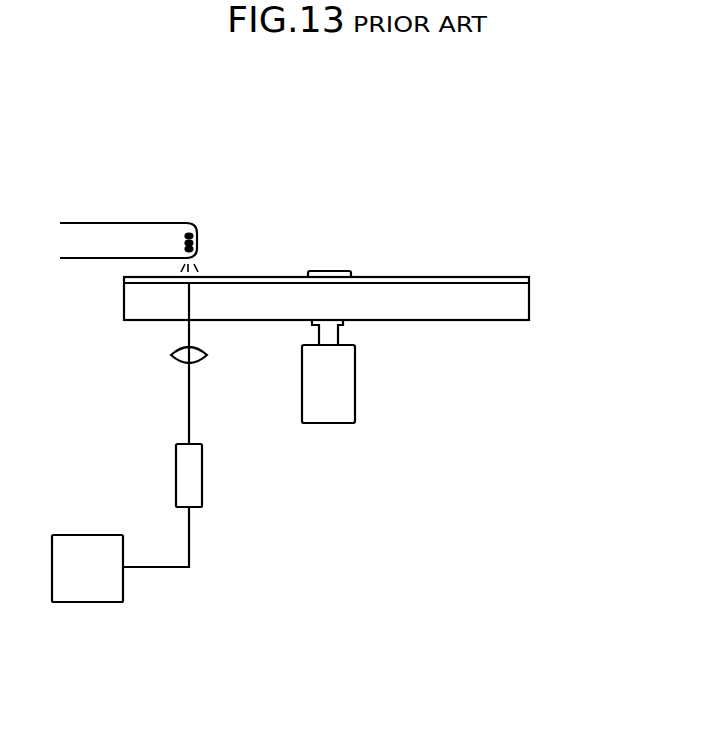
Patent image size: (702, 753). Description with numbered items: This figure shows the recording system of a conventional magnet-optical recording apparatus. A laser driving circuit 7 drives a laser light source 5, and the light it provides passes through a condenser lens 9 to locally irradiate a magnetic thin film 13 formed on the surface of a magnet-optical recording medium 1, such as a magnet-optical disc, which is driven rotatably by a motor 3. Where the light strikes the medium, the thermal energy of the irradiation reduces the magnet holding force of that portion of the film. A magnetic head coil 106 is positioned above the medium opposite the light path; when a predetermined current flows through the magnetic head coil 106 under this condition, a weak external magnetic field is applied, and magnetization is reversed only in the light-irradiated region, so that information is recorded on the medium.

The magnetic head coil 106 is at (193, 218).
The magnet-optical recording medium 1 is at (529, 295).
The magnetic thin film 13 is at (423, 277).
The motor 3 is at (350, 379).
The condenser lens 9 is at (172, 358).
The laser light source 5 is at (197, 470).
The laser driving circuit 7 is at (105, 589).